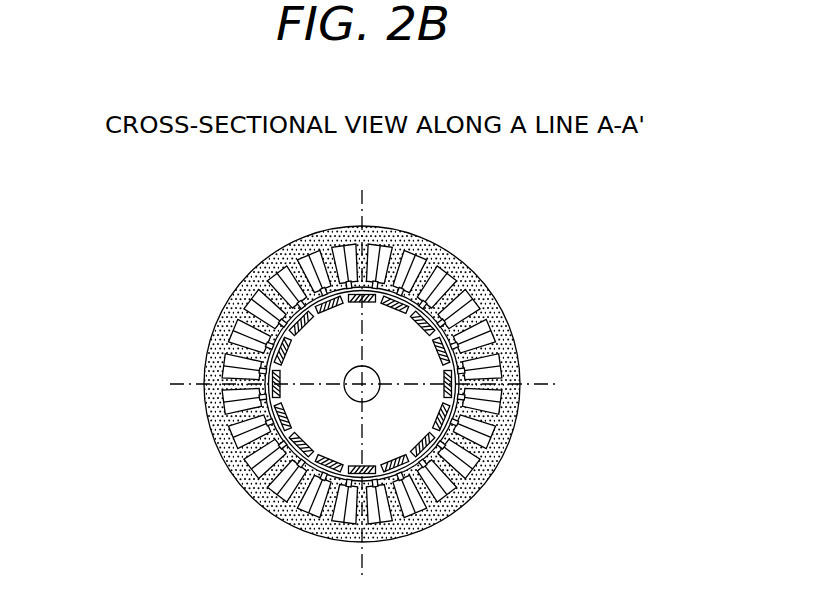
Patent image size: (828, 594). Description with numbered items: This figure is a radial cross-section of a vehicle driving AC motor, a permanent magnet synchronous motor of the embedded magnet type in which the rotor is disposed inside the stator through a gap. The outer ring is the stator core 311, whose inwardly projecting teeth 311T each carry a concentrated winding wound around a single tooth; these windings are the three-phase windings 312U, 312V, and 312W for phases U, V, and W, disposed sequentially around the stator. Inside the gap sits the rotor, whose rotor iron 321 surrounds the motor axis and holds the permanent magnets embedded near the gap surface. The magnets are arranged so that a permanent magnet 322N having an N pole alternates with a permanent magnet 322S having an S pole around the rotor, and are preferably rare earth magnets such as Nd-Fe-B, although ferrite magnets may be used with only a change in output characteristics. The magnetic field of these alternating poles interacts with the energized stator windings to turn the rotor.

The stator core 311 is at (328, 384).
The teeth 311T is at (288, 384).
The U-phase winding 312U is at (302, 384).
The V-phase winding 312V is at (308, 383).
The W-phase winding 312W is at (325, 392).
The rotor iron 321 is at (425, 392).
The N-pole permanent magnet 322N is at (433, 352).
The S-pole permanent magnet 322S is at (439, 376).